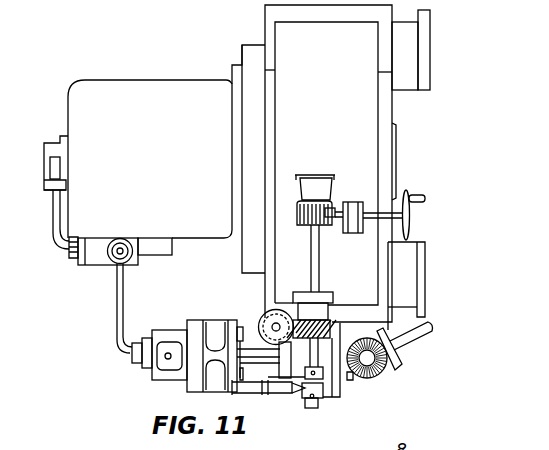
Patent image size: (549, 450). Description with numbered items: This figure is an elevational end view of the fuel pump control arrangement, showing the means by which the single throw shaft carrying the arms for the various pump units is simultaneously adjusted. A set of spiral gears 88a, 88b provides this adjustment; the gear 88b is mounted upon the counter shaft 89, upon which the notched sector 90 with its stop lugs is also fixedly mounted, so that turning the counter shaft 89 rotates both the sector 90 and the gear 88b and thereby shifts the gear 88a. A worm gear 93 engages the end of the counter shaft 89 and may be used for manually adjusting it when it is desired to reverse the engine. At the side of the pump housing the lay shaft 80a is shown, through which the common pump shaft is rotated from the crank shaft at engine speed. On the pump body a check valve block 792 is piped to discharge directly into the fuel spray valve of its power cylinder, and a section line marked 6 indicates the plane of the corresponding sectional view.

The worm gear 93 is at (331, 205).
The counter shaft 89 is at (317, 283).
The spiral gear 88a is at (277, 322).
The spiral gear 88b is at (328, 315).
The lay shaft 80a is at (412, 336).
The notched sector 90 is at (292, 375).
The check valve block 792 is at (98, 259).
The section line 6- 6 is at (68, 251).